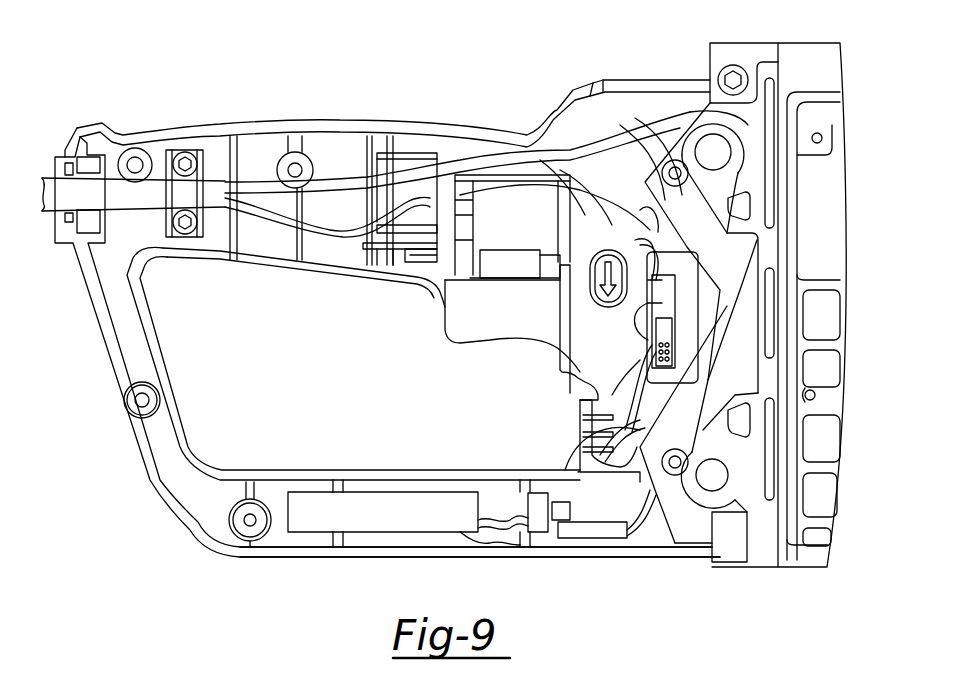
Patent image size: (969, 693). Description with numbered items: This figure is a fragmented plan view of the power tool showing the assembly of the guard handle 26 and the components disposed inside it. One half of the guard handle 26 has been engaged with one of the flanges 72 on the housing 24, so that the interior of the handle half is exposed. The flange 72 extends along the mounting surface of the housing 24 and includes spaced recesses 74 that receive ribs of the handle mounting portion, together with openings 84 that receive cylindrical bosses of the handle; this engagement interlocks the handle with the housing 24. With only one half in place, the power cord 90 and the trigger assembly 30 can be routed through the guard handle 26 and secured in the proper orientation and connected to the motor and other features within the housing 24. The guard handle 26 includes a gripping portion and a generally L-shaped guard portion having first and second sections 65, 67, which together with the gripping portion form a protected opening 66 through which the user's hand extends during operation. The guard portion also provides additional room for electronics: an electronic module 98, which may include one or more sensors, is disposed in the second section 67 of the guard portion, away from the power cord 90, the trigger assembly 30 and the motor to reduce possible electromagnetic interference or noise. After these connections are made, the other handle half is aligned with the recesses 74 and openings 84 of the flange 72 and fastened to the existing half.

The housing 24 is at (718, 60).
The guard handle 26 is at (343, 127).
The trigger assembly 30 is at (448, 362).
The first section 65 is at (95, 347).
The protected opening 66 is at (222, 423).
The second section 67 is at (260, 550).
The flange 72 is at (737, 513).
The recess 74 is at (770, 178).
The opening 84 is at (720, 477).
The power cord 90 is at (137, 197).
The electronic module 98 is at (402, 503).